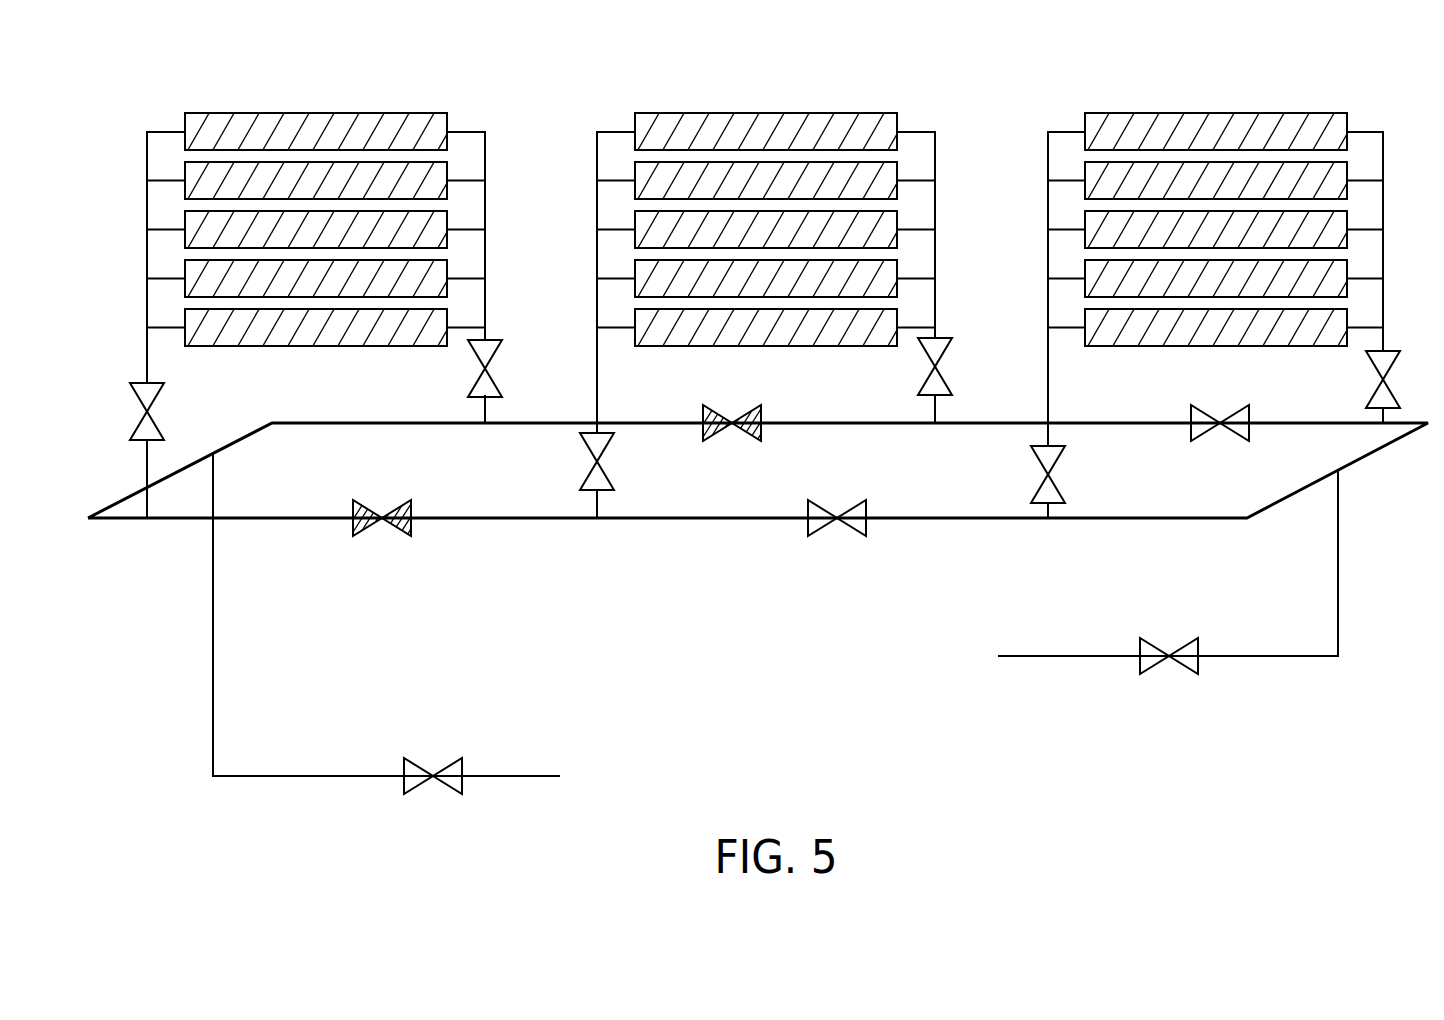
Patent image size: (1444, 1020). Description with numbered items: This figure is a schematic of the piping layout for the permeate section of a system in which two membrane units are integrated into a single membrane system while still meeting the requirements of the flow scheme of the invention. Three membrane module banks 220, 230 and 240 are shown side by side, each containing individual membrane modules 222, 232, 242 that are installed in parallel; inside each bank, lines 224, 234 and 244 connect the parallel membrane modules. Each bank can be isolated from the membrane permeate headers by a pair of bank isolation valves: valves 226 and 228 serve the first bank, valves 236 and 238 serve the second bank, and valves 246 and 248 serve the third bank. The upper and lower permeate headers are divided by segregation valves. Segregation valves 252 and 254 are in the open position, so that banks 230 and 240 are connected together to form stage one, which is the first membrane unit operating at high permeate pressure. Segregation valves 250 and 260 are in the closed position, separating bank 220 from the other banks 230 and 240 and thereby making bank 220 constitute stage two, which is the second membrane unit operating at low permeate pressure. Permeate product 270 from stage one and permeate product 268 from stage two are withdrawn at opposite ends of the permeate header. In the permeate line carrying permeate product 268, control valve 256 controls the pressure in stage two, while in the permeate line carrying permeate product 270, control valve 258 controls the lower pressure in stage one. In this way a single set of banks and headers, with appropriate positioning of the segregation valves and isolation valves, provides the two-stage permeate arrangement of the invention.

The membrane module bank 220 is at (410, 92).
The membrane module 222 is at (185, 172).
The line 224 is at (148, 157).
The bank isolation valve 226 is at (157, 400).
The bank isolation valve 228 is at (493, 352).
The membrane module bank 230 is at (880, 92).
The membrane module 232 is at (635, 172).
The line 234 is at (597, 172).
The bank isolation valve 236 is at (603, 465).
The bank isolation valve 238 is at (940, 380).
The membrane module bank 240 is at (1302, 92).
The membrane module 242 is at (1085, 172).
The line 244 is at (1048, 172).
The bank isolation valve 246 is at (1050, 478).
The bank isolation valve 248 is at (1380, 387).
The segregation valve 250 is at (720, 405).
The segregation valve 252 is at (1208, 405).
The segregation valve 254 is at (854, 499).
The control valve 256 is at (1163, 640).
The control valve 258 is at (428, 760).
The segregation valve 260 is at (370, 498).
The permeate product 268 is at (1338, 606).
The permeate product 270 is at (213, 625).